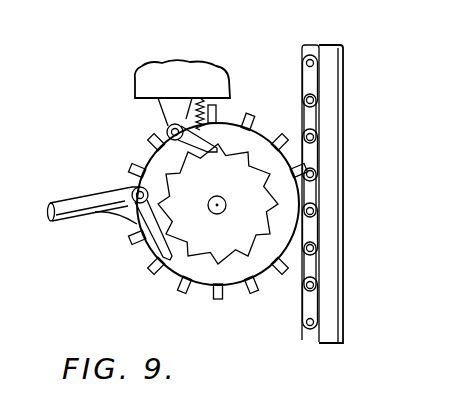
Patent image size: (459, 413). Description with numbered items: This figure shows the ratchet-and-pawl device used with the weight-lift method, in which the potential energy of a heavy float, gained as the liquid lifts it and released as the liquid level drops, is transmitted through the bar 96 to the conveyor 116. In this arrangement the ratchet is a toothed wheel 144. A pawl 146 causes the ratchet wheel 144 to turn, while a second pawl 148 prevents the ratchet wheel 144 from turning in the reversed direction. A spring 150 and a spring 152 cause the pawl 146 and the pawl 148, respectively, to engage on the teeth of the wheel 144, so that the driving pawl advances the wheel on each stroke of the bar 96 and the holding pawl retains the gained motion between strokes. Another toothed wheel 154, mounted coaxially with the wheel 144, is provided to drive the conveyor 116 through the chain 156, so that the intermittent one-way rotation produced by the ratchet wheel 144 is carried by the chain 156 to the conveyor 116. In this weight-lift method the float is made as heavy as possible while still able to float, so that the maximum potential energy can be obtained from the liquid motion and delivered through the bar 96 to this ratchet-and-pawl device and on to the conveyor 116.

The bar 96 is at (77, 204).
The conveyor 116 is at (358, 142).
The toothed wheel 144 is at (233, 258).
The pawl 146 is at (146, 250).
The pawl 148 is at (210, 137).
The spring 150 is at (126, 222).
The spring 152 is at (216, 108).
The toothed wheel 154 is at (193, 298).
The chain 156 is at (309, 52).